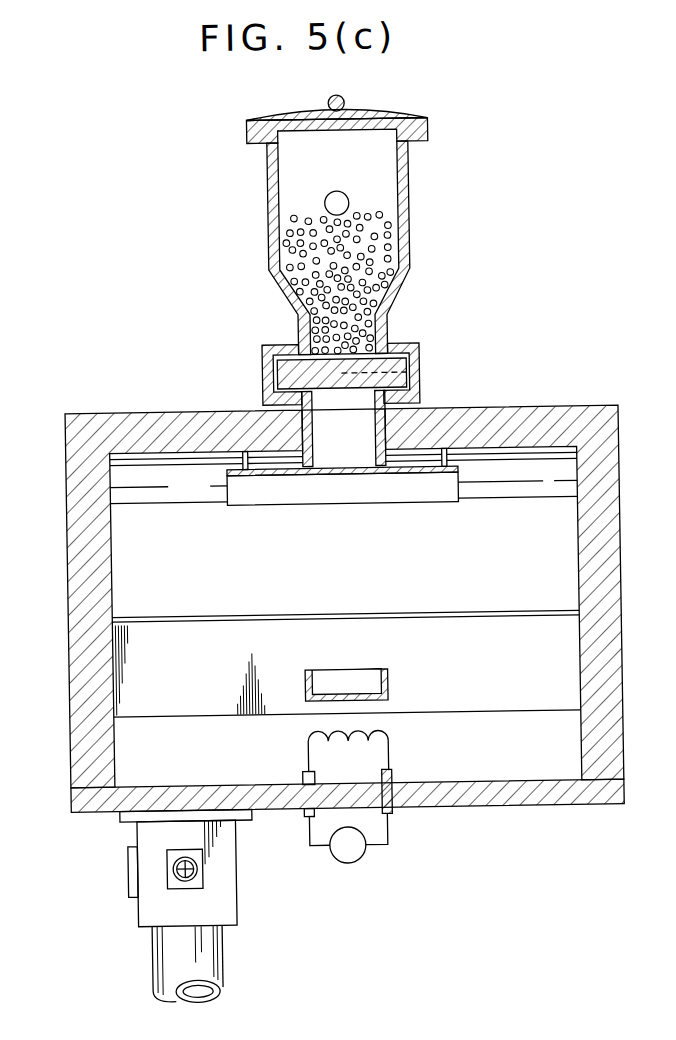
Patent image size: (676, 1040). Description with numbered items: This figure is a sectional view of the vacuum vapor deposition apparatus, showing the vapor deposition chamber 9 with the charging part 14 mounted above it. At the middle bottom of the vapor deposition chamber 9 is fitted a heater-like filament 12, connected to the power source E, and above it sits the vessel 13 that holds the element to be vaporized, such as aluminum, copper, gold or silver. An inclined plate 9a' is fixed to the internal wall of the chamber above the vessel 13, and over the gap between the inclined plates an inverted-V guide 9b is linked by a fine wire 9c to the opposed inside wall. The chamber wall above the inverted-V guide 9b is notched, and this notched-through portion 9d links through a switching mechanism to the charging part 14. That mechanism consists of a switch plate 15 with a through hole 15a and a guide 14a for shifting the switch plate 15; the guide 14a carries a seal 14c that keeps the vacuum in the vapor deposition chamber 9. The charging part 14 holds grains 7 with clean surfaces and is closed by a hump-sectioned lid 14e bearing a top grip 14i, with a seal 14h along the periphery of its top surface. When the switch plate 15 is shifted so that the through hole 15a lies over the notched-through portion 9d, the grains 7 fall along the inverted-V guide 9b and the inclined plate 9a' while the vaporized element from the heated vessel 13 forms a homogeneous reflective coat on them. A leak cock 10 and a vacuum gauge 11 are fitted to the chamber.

The grains 7 is at (413, 259).
The vapor deposition chamber 9 is at (538, 409).
The inclined plate 9a' is at (346, 644).
The inverted-V guide 9b is at (432, 491).
The fine wire 9c is at (240, 462).
The notched-through portion 9d is at (339, 445).
The leak cock 10 is at (199, 870).
The vacuum gauge 11 is at (124, 865).
The heater-like filament 12 is at (303, 727).
The vessel 13 is at (389, 679).
The charging part 14 is at (415, 209).
The guide 14a is at (284, 341).
The seal 14c is at (400, 344).
The lid 14e is at (383, 113).
The seal 14h is at (417, 146).
The knob 14i is at (335, 99).
The switch plate 15 is at (289, 372).
The through hole 15a is at (408, 374).